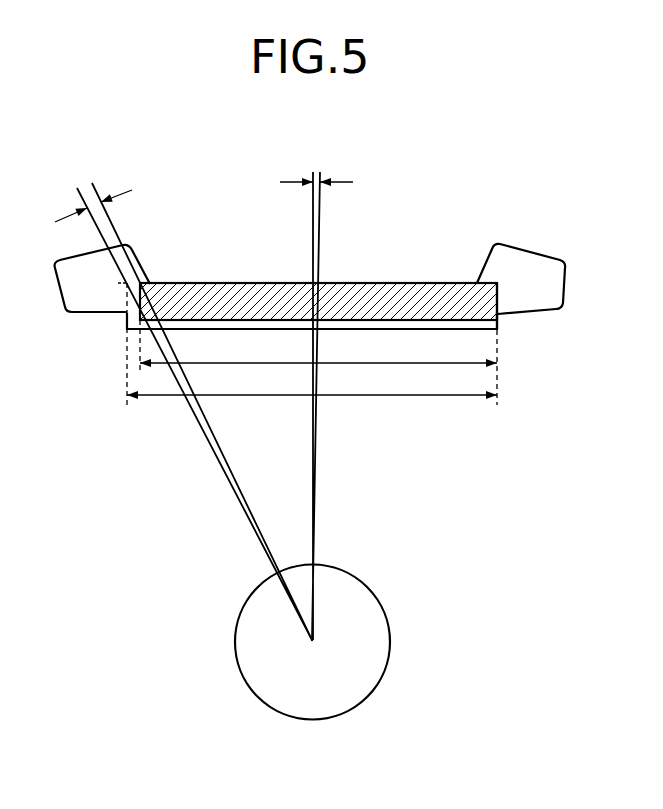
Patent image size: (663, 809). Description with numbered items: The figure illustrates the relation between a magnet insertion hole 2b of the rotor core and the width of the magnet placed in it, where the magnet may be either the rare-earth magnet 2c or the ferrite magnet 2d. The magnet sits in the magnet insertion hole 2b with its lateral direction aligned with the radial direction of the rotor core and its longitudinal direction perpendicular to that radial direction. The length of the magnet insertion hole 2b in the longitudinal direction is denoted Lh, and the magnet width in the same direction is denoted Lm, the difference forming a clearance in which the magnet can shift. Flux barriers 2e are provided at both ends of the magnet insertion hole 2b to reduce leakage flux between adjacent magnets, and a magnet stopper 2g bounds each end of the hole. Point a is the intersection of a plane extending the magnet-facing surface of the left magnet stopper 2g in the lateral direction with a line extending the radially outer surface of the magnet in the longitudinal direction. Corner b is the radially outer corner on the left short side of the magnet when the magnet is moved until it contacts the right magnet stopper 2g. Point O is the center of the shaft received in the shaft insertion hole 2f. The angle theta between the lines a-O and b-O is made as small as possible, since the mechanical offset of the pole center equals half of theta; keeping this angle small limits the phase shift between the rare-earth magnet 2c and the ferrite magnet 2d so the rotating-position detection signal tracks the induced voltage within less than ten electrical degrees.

The magnet insertion hole 2b is at (251, 283).
The rare-earth magnet 2c is at (318, 281).
The ferrite magnet 2d is at (420, 297).
The flux barrier 2e is at (527, 267).
The shaft insertion hole 2f is at (390, 633).
The magnet stopper 2g is at (499, 318).
The intersection point a is at (123, 283).
The corner b is at (140, 283).
The center of the shaft O is at (312, 642).
The magnet width in the longitudinal direction Lm is at (318, 351).
The length of the magnet insertion hole in the longitudinal direction Lh is at (312, 383).